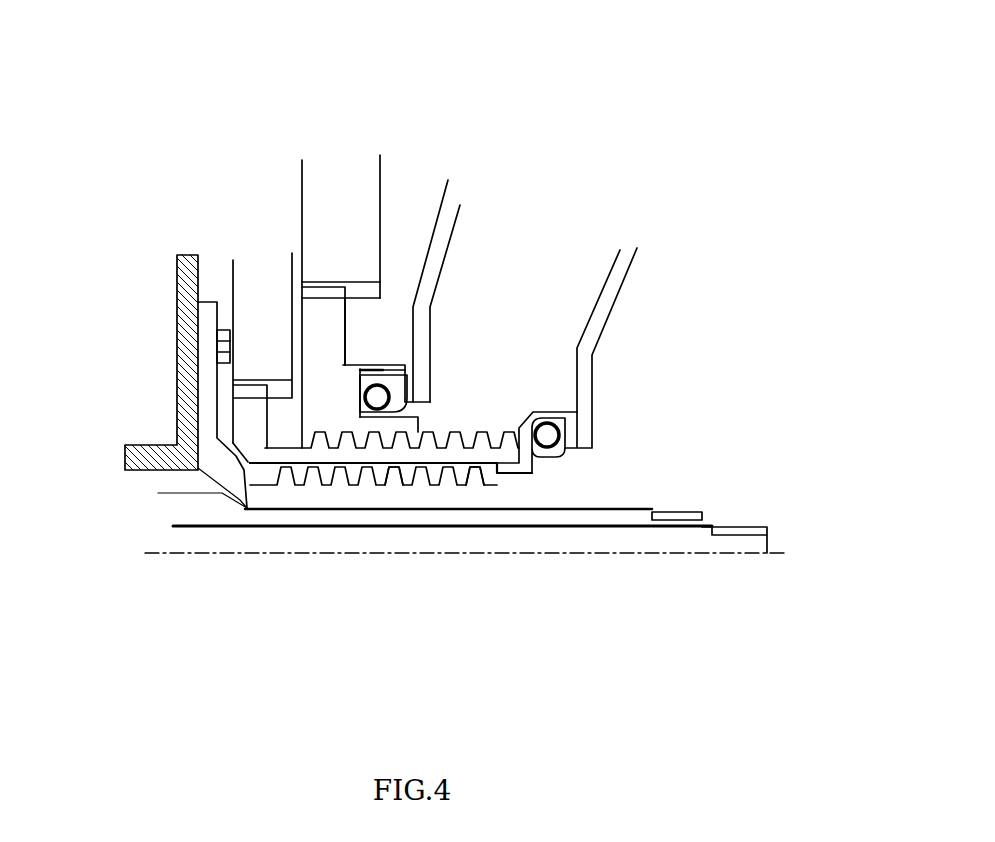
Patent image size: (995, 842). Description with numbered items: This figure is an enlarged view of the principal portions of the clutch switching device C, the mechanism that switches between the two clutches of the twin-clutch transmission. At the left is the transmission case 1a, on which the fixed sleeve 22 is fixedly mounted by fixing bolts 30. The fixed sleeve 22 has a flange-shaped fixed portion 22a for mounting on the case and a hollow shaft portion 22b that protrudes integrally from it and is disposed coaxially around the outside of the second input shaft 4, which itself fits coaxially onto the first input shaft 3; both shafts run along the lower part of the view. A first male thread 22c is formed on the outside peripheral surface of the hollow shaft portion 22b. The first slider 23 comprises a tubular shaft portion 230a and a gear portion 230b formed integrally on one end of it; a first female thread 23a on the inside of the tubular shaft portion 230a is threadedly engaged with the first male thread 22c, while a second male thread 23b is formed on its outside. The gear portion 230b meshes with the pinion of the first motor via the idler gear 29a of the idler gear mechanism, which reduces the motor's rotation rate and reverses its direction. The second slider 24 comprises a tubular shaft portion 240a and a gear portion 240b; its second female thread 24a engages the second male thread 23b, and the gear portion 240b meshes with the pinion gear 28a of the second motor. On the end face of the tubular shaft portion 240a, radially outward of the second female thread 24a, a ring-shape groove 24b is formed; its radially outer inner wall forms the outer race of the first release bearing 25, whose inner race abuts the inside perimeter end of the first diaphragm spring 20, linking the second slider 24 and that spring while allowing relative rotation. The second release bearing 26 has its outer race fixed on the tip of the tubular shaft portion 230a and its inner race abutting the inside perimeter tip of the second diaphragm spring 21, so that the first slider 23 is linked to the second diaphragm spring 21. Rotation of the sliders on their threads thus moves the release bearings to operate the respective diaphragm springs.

The transmission case 1a is at (152, 313).
The fixing bolts 30 is at (219, 343).
The idler gear 29a is at (266, 302).
The pinion gear 28a is at (317, 193).
The second female thread 24a is at (303, 283).
The second slider 24 is at (513, 110).
The gear portion 240b is at (322, 313).
The tubular shaft portion 240a is at (381, 367).
The ring-shape groove 24b is at (437, 402).
The first release bearing 25 is at (398, 364).
The first diaphragm spring 20 is at (455, 237).
The second diaphragm spring 21 is at (617, 275).
The second male thread 23b is at (481, 443).
The first female thread 23a is at (423, 452).
The first slider 23 is at (585, 652).
The gear portion 230b is at (402, 474).
The tubular shaft portion 230a is at (462, 472).
The second release bearing 26 is at (550, 412).
The fixed portion 22a is at (210, 405).
The hollow shaft portion 22b is at (322, 498).
The first male thread 22c is at (367, 484).
The fixed sleeve 22 is at (95, 575).
The second input shaft 4 is at (600, 510).
The first input shaft 3 is at (712, 527).
The clutch switching device C is at (760, 174).